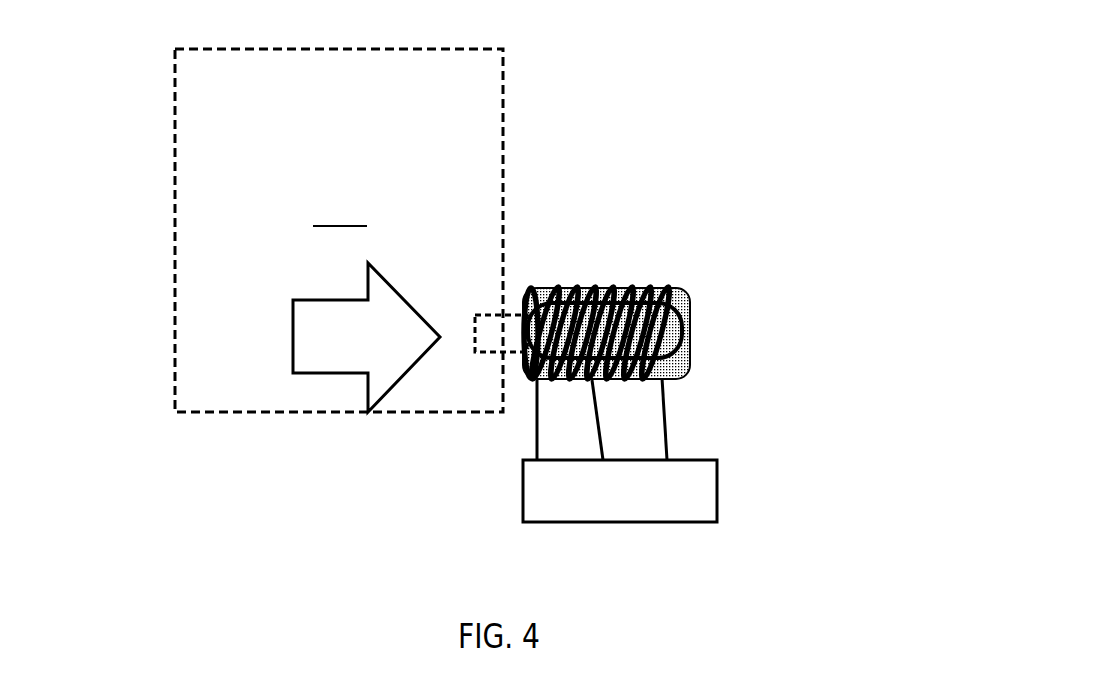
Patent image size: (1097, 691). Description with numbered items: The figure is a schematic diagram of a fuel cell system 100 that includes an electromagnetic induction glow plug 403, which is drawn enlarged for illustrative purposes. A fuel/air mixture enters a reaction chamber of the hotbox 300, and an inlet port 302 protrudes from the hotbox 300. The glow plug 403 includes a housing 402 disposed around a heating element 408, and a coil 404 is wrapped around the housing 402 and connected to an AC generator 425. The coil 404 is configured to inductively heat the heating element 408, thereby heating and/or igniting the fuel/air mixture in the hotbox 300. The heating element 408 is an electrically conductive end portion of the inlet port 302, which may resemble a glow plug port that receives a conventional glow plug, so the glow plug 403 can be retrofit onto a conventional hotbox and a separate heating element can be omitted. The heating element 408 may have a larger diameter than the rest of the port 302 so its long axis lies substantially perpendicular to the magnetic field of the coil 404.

The fuel cell system 100 is at (116, 55).
The hotbox 300 is at (503, 120).
The inlet port 302 is at (500, 357).
The electromagnetic induction glow plug 403 is at (678, 297).
The coil 404 is at (647, 283).
The housing 402 is at (690, 342).
The heating element 408 is at (697, 358).
The AC generator 425 is at (717, 490).